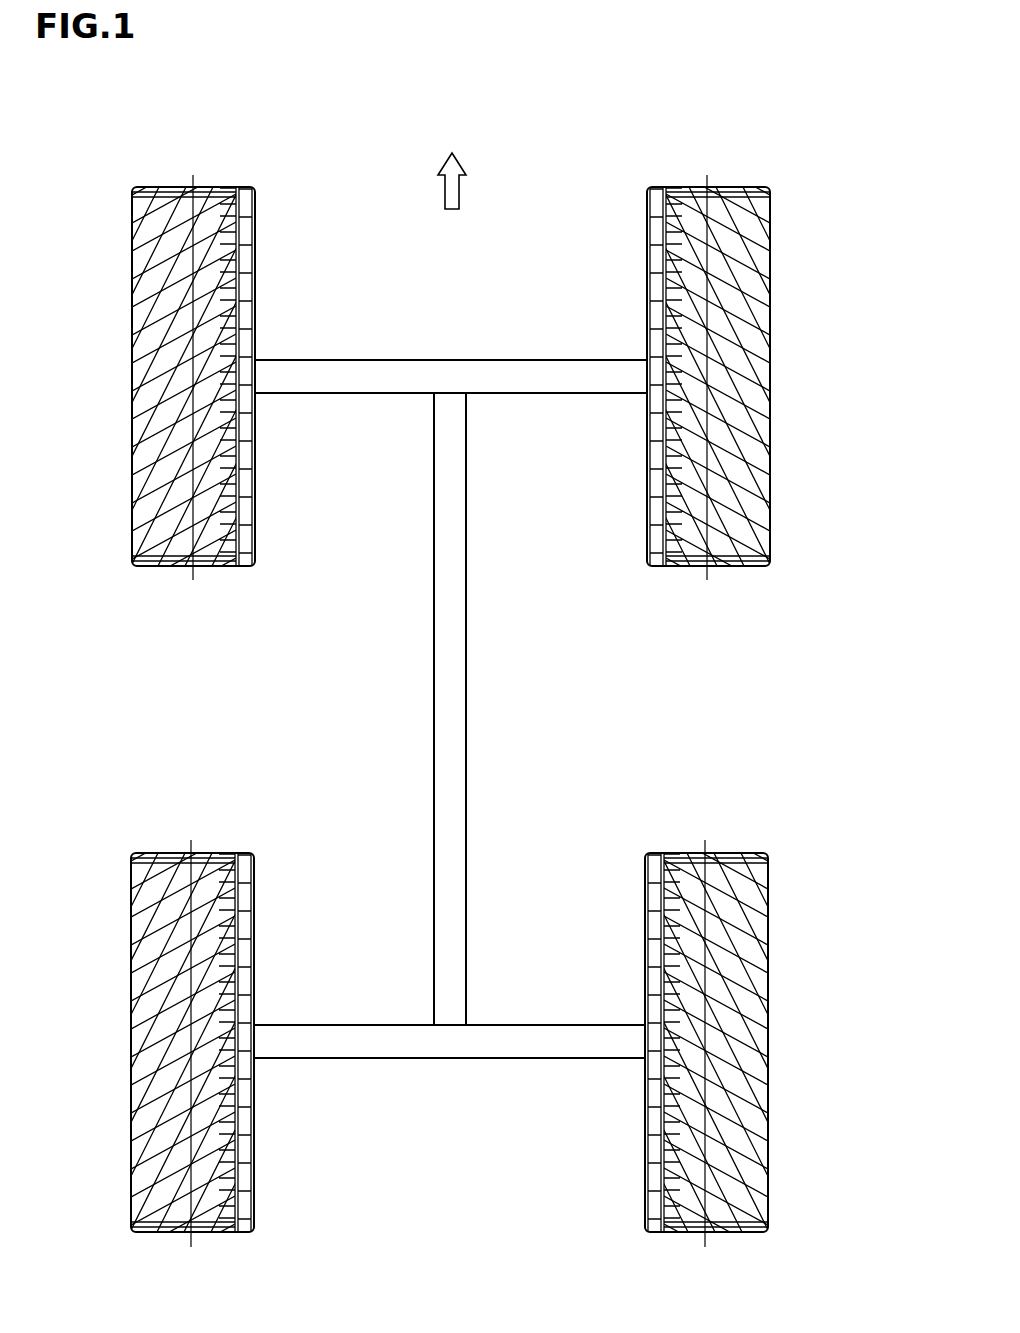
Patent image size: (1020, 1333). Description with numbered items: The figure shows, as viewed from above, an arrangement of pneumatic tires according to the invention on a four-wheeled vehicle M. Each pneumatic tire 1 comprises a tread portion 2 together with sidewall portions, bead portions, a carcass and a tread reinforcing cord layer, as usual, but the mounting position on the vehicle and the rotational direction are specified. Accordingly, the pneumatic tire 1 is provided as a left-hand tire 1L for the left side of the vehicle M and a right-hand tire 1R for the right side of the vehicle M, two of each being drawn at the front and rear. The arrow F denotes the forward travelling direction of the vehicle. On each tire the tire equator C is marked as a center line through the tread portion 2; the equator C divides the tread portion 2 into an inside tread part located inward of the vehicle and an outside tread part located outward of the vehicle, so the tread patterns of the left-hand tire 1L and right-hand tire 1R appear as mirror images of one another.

The pneumatic tire 1 is at (480, 693).
The left-hand tire 1L is at (165, 183).
The right-hand tire 1R is at (738, 183).
The tread portion 2 is at (222, 300).
The tire equator C is at (450, 696).
The travelling direction F is at (452, 166).
The vehicle M is at (507, 707).